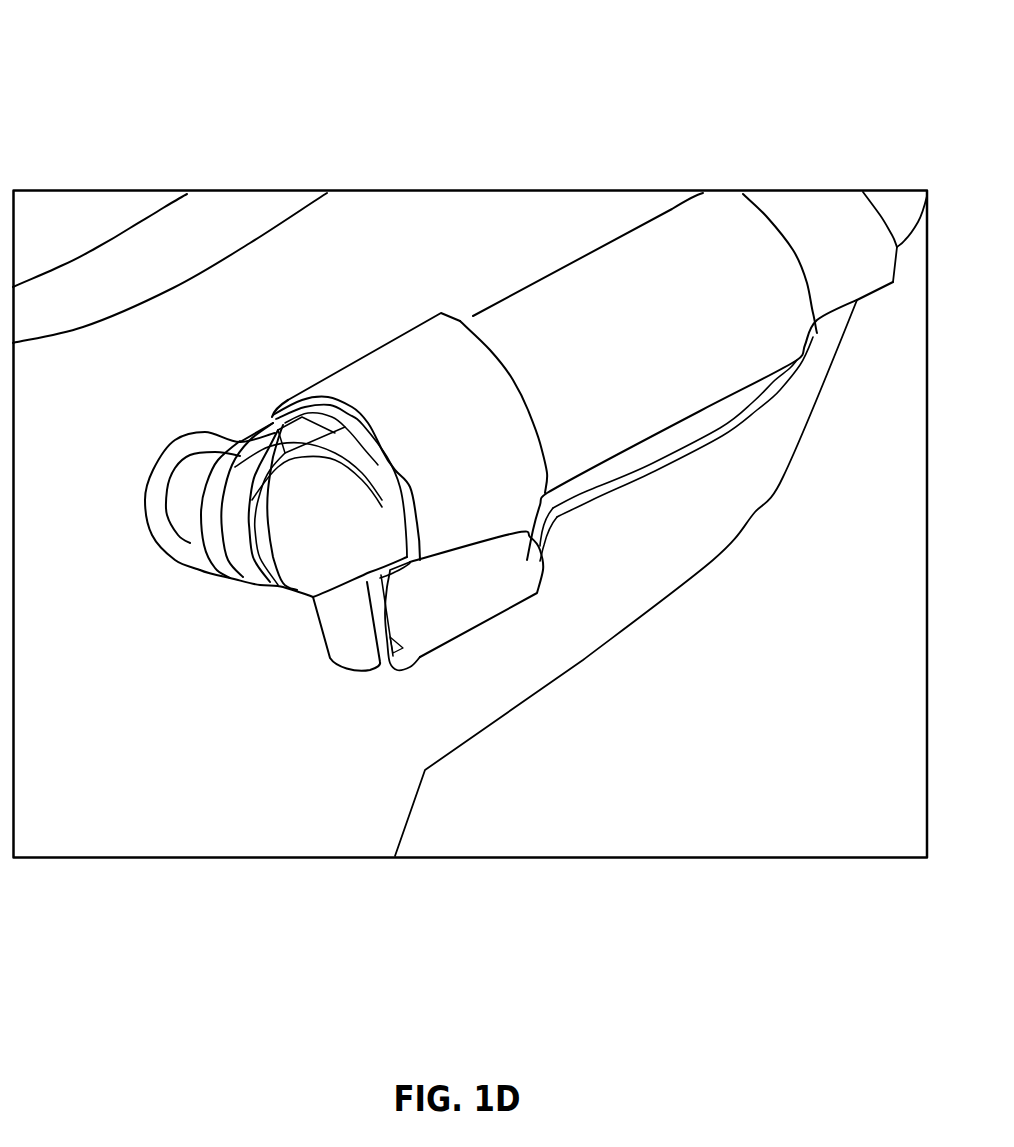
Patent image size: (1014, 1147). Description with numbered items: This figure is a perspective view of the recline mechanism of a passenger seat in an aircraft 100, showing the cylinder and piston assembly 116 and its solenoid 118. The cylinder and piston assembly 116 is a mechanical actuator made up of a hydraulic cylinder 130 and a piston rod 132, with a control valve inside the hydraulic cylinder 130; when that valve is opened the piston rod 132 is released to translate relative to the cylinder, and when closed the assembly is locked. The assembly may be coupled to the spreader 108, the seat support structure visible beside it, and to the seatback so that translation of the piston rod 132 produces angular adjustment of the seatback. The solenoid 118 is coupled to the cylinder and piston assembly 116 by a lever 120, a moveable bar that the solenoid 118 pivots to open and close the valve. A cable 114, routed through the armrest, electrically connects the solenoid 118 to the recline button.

The aircraft 100 is at (98, 33).
The spreader 108 is at (517, 703).
The cable 114 is at (592, 507).
The cylinder and piston assembly 116 is at (396, 309).
The solenoid 118 is at (433, 660).
The lever 120 is at (322, 640).
The hydraulic cylinder 130 is at (595, 288).
The piston rod 132 is at (823, 270).